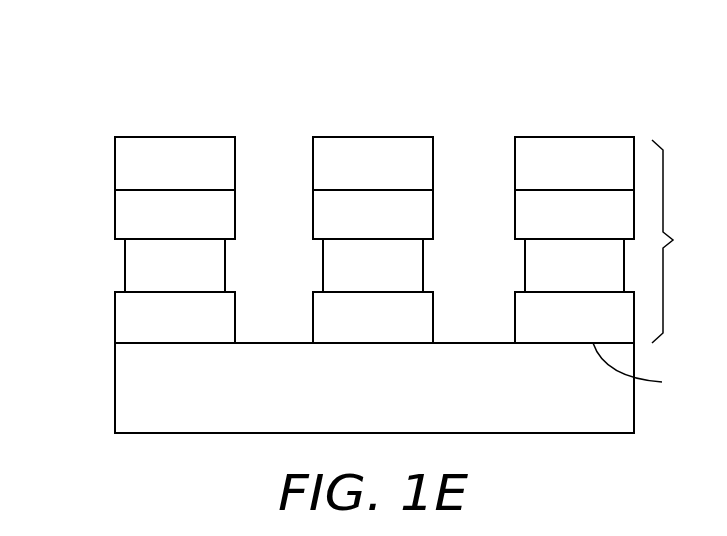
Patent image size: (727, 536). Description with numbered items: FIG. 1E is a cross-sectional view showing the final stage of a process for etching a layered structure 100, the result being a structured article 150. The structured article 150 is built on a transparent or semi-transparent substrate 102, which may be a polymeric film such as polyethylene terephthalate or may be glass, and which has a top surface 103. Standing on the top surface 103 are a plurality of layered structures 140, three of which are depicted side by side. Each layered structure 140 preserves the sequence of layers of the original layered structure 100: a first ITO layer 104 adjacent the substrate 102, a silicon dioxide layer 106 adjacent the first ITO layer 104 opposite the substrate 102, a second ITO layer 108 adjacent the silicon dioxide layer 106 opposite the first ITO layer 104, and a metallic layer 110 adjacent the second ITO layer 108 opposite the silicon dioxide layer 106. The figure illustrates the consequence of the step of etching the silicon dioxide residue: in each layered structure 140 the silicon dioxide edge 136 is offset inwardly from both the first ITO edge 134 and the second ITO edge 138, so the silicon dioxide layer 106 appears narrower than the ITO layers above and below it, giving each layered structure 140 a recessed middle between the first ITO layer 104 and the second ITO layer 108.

The layered structure 100 is at (686, 241).
The substrate 102 is at (130, 382).
The top surface 103 is at (649, 369).
The first ITO layer 104 is at (130, 317).
The silicon dioxide layer 106 is at (130, 262).
The second ITO layer 108 is at (130, 213).
The metallic layer 110 is at (130, 160).
The first ITO edge 134 is at (433, 319).
The silicon dioxide edge 136 is at (423, 262).
The second ITO edge 138 is at (433, 206).
The layered structures 140 is at (515, 147).
The structured article 150 is at (144, 69).